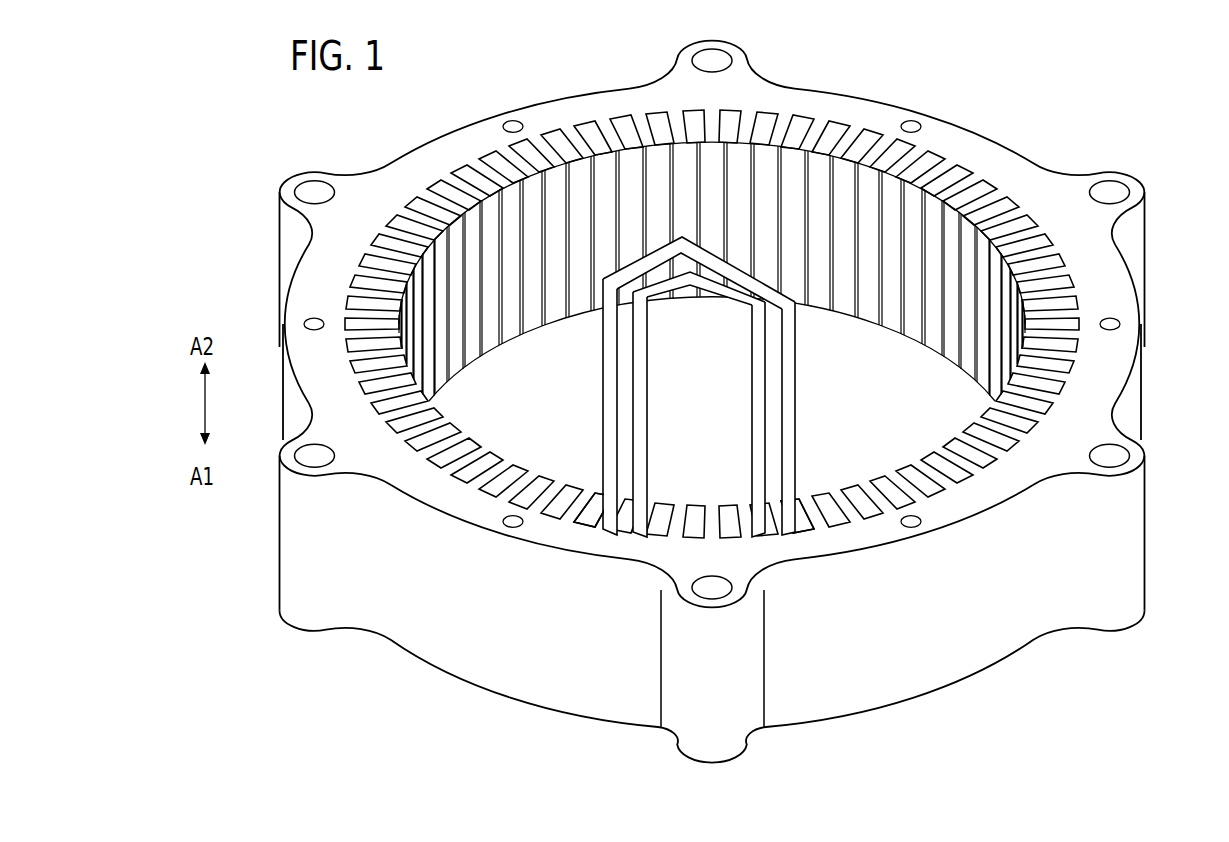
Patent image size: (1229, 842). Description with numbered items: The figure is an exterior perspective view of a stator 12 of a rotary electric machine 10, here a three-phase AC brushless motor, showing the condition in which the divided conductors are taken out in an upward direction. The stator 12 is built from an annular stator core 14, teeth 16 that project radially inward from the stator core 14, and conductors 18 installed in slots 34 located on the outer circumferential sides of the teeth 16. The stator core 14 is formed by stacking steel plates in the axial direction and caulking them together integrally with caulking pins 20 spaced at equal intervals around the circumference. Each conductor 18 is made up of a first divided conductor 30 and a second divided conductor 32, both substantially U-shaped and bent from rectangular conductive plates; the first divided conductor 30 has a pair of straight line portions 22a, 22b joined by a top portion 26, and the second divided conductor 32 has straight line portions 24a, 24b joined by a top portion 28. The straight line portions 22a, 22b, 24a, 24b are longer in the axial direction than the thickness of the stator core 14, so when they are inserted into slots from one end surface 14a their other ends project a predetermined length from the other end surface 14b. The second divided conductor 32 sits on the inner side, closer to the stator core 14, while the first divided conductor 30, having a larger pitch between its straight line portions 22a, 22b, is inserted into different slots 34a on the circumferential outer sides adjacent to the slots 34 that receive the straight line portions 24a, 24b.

The rotary electric machine 10 is at (1098, 79).
The stator 12 is at (987, 127).
The stator core 14 is at (514, 672).
The one end surface 14a is at (1024, 472).
The another end surface 14b is at (1000, 668).
The teeth 16 is at (512, 220).
The conductors 18 is at (812, 385).
The caulking pins 20 is at (1128, 324).
The straight line portion 22a is at (606, 354).
The straight line portion 22b is at (789, 467).
The straight line portion 24a is at (641, 474).
The straight line portion 24b is at (753, 428).
The top portion 26 is at (676, 245).
The top portion 28 is at (658, 286).
The first divided conductor 30 is at (797, 437).
The second divided conductor 32 is at (648, 391).
The slots 34 is at (500, 487).
The slots 34a is at (597, 540).